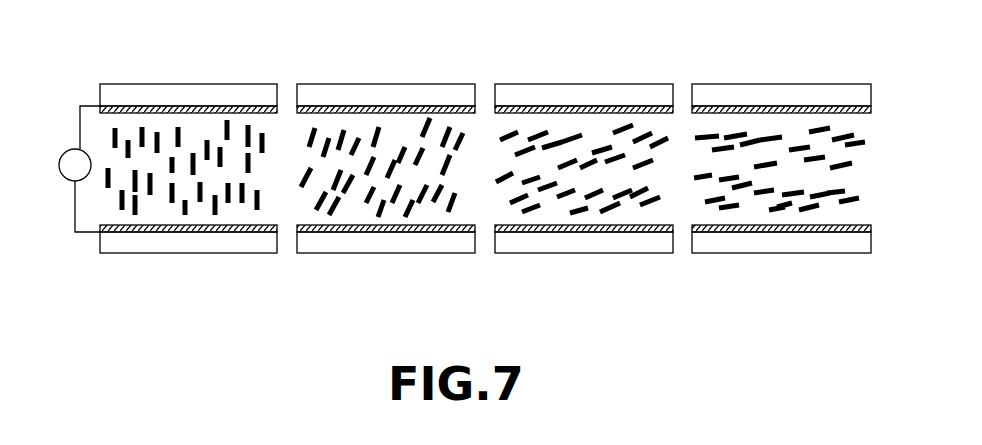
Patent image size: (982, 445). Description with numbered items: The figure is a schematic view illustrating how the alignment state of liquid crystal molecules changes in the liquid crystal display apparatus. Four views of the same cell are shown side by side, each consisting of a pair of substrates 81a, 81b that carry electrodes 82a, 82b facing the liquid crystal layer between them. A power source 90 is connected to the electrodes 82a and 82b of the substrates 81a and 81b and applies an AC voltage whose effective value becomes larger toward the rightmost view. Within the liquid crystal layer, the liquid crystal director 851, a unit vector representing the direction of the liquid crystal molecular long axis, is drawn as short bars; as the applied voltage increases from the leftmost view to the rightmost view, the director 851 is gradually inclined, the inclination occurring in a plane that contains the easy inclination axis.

The liquid crystal director 851 is at (157, 132).
The substrate 81a is at (213, 90).
The electrode 82a is at (254, 108).
The electrode 82b is at (185, 232).
The substrate 81b is at (233, 245).
The power source 90 is at (60, 188).